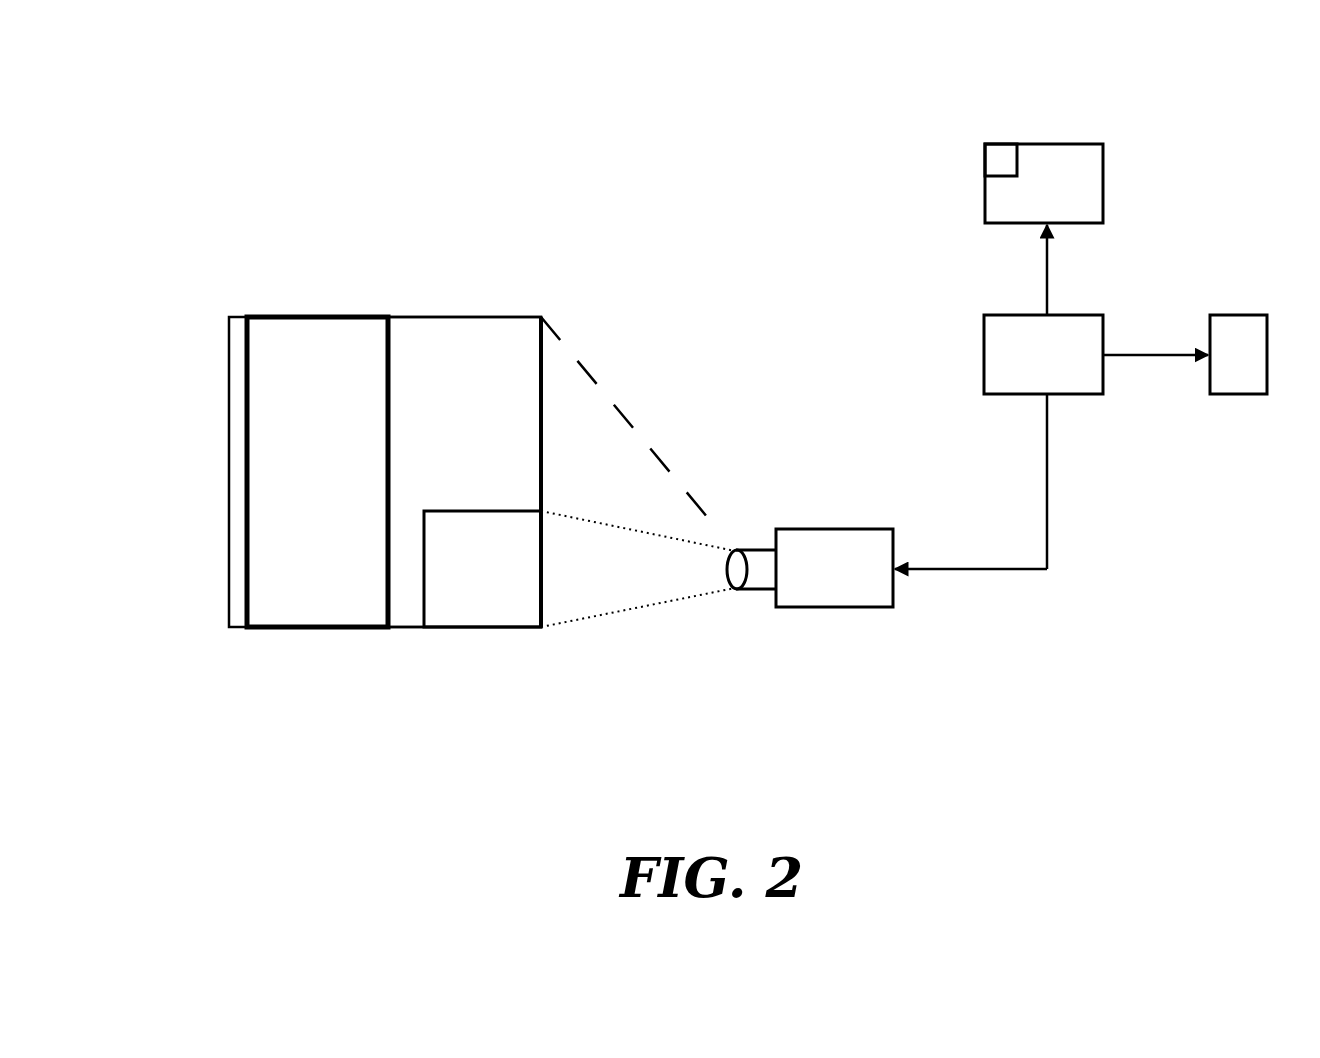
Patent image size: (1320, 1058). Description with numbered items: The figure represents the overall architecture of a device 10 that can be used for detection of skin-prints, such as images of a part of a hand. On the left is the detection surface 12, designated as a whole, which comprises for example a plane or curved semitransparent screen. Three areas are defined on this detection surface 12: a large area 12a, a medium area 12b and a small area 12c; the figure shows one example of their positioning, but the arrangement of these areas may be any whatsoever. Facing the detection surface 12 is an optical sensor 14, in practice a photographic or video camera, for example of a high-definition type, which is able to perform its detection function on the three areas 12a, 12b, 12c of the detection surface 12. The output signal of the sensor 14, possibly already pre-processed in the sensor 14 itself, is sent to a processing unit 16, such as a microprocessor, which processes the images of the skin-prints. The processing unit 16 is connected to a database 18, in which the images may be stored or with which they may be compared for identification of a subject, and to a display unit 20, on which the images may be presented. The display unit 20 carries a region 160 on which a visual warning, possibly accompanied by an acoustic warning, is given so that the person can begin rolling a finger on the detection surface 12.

The device 10 is at (656, 176).
The detection surface 12 is at (228, 637).
The large area 12a is at (453, 368).
The medium area 12b is at (320, 350).
The small area 12c is at (478, 607).
The optical sensor 14 is at (846, 590).
The processing unit 16 is at (1018, 388).
The region of the display unit 160 is at (1001, 153).
The database 18 is at (1236, 385).
The display unit 20 is at (1081, 178).